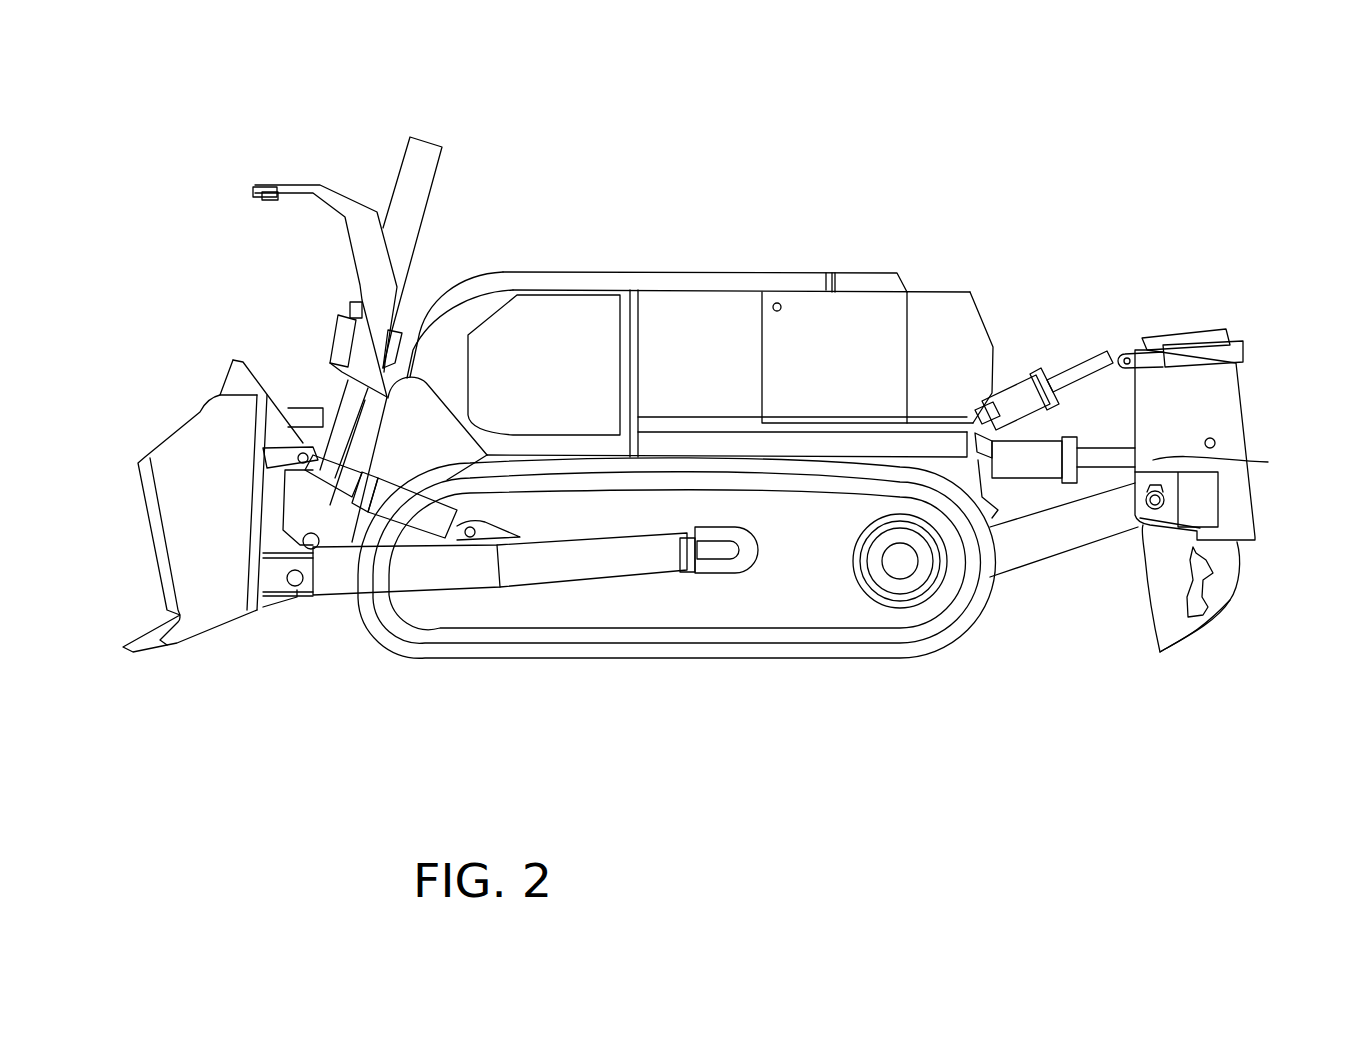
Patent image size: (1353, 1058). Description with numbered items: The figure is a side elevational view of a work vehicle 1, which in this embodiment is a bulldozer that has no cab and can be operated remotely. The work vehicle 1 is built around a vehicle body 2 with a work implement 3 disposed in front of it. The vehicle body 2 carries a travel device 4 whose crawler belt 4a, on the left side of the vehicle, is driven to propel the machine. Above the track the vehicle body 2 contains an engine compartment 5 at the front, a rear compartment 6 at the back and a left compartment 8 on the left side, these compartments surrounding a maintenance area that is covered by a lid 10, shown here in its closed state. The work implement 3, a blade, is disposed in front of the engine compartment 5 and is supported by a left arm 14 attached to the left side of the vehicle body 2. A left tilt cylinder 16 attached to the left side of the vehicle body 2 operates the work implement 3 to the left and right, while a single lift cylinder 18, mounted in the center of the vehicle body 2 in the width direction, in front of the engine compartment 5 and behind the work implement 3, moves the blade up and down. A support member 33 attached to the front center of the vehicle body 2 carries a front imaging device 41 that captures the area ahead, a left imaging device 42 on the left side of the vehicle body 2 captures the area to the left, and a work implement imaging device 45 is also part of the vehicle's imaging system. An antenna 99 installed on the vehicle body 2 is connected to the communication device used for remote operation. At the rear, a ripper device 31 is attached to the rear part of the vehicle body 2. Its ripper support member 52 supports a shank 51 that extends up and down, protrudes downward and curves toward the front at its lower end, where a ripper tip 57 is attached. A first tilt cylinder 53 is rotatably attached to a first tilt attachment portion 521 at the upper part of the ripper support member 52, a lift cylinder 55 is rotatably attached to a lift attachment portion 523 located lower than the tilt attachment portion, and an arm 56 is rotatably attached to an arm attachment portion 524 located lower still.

The work vehicle 1 is at (293, 107).
The vehicle body 2 is at (686, 258).
The work implement 3 is at (155, 427).
The travel device 4 is at (782, 678).
The crawler belt 4a is at (693, 640).
The engine compartment 5 is at (578, 270).
The rear compartment 6 is at (954, 290).
The left compartment 8 is at (864, 287).
The lid 10 is at (820, 271).
The left arm 14 is at (543, 568).
The left tilt cylinder 16 is at (405, 503).
The lift cylinder 18 is at (427, 140).
The ripper device 31 is at (1097, 345).
The support member 33 is at (350, 195).
The front imaging device 41 is at (345, 305).
The left imaging device 42 is at (787, 303).
The work implement imaging device 45 is at (273, 193).
The shank 51 is at (1236, 566).
The ripper support member 52 is at (1245, 375).
The first tilt cylinder 53 is at (1037, 370).
The lift cylinder 55 is at (1025, 462).
The arm 56 is at (1075, 533).
The ripper tip 57 is at (1185, 632).
The antenna 99 is at (832, 270).
The first tilt attachment portion 521 is at (1127, 357).
The lift attachment portion 523 is at (1160, 455).
The arm attachment portion 524 is at (1148, 522).